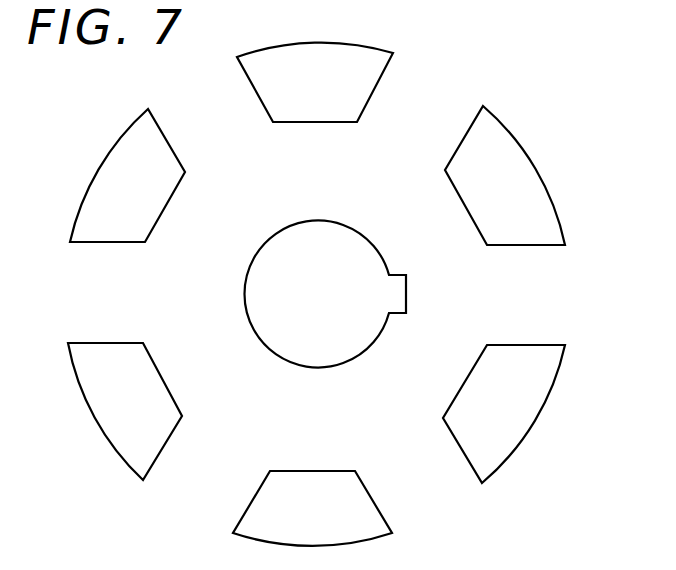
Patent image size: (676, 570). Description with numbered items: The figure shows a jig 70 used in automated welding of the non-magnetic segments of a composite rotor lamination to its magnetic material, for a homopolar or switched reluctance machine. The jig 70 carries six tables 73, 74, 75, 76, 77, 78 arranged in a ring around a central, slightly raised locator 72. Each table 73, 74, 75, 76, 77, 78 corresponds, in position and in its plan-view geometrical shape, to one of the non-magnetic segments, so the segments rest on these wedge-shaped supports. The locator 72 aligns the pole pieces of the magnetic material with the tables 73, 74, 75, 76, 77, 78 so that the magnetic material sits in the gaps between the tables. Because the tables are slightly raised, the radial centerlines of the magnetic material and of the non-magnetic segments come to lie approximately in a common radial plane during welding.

The jig 70 is at (70, 143).
The locator 72 is at (407, 297).
The table 73 is at (510, 345).
The table 74 is at (520, 143).
The table 75 is at (374, 49).
The table 76 is at (157, 119).
The table 77 is at (107, 343).
The table 78 is at (323, 471).